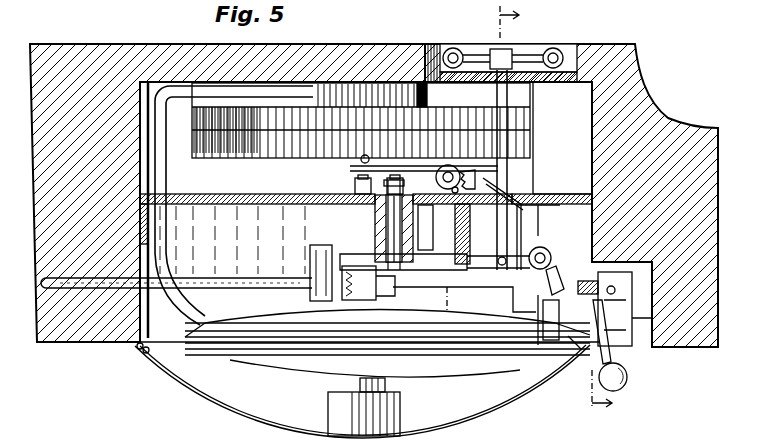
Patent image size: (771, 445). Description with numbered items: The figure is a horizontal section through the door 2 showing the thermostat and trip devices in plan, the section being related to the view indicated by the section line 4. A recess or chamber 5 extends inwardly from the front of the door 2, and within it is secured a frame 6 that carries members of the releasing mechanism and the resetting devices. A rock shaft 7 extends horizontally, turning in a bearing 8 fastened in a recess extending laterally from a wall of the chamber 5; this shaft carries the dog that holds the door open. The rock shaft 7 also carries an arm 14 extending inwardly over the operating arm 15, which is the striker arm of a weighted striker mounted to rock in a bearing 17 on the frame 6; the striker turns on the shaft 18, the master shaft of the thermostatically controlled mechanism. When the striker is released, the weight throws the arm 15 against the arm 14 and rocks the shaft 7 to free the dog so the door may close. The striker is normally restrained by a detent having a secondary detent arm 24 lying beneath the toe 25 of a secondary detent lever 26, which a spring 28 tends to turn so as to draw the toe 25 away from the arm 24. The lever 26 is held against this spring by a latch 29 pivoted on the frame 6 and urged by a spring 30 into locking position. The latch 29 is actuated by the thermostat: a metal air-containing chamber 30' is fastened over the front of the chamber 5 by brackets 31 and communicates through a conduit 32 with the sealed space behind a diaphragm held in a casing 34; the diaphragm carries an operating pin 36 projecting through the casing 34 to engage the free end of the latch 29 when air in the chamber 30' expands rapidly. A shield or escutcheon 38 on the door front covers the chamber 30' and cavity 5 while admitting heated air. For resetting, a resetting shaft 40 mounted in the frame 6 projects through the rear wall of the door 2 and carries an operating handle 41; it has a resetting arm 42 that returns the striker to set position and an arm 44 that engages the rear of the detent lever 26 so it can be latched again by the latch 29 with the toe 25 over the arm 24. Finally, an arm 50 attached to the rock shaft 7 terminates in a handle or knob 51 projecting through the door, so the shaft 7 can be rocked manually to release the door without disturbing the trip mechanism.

The door 2 is at (630, 94).
The section line 4- 4 is at (565, 211).
The recess or chamber 5 is at (562, 138).
The frame 6 is at (220, 204).
The rock shaft 7 is at (205, 284).
The bearing 8 is at (648, 293).
The arm 14 is at (316, 275).
The operating arm 15 is at (346, 262).
The bearing 17 is at (374, 214).
The shaft 18 is at (382, 241).
The secondary detent arm 24 is at (453, 290).
The toe 25 is at (576, 321).
The secondary detent lever 26 is at (531, 243).
The spring 28 is at (524, 229).
The latch 29 is at (507, 192).
The spring 30 is at (459, 172).
The air-containing chamber 30' is at (352, 359).
The brackets 31 is at (140, 351).
The conduit or pipe 32 is at (163, 84).
The casing 34 is at (257, 136).
The operating pin 36 is at (370, 160).
The shield or escutcheon 38 is at (461, 425).
The resetting shaft 40 is at (497, 97).
The operating handle 41 is at (523, 58).
The resetting arm 42 is at (478, 254).
The arm 44 is at (556, 283).
The arm 50 is at (616, 352).
The handle or knob 51 is at (629, 382).